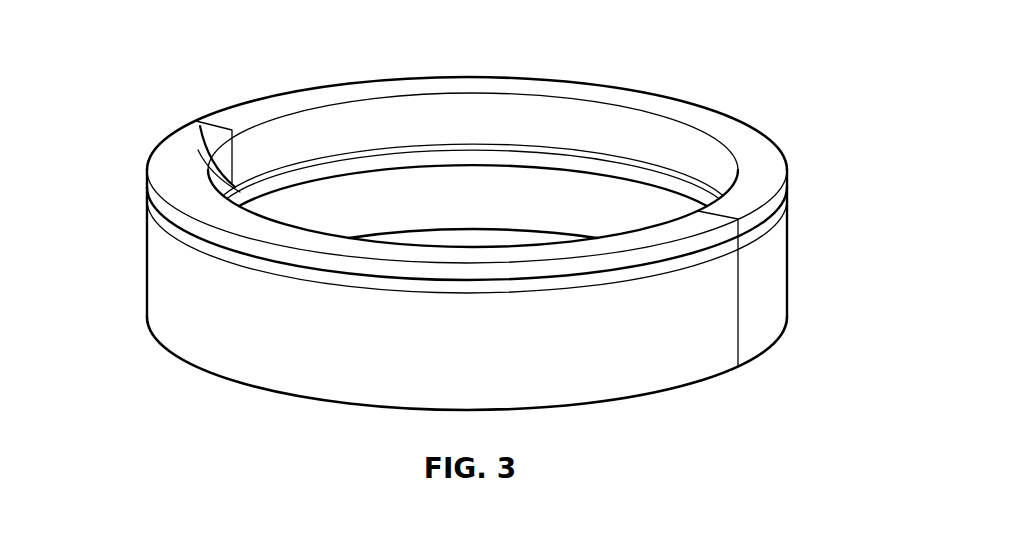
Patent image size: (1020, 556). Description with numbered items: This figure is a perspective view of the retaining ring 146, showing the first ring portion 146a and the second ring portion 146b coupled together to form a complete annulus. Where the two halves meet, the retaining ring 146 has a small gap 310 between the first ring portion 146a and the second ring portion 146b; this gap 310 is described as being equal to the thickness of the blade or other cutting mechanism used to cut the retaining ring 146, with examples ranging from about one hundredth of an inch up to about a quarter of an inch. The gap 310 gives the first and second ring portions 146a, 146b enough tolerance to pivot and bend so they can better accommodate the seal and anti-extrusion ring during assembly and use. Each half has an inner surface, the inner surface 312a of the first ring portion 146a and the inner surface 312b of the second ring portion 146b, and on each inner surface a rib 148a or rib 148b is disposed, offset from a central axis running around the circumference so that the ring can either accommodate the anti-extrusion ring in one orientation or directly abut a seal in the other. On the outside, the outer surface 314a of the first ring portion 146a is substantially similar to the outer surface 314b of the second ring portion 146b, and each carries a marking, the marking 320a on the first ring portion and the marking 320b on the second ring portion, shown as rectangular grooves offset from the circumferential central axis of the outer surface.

The retaining ring 146 is at (474, 219).
The first ring portion 146a is at (504, 196).
The second ring portion 146b is at (404, 301).
The rib 148a is at (333, 168).
The rib 148b is at (197, 165).
The gap 310 is at (214, 127).
The inner surface 312a is at (446, 103).
The inner surface 312b is at (193, 168).
The outer surface 314a is at (773, 285).
The outer surface 314b is at (247, 363).
The marking 320a is at (812, 207).
The marking 320b is at (131, 204).